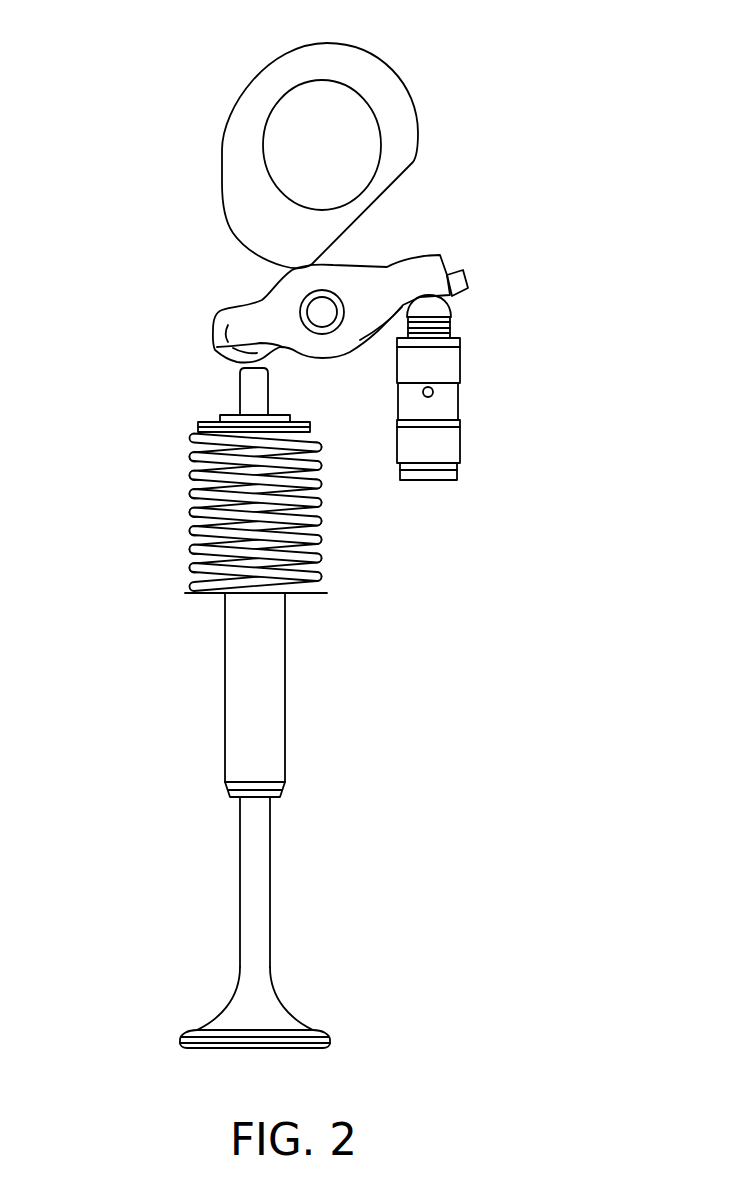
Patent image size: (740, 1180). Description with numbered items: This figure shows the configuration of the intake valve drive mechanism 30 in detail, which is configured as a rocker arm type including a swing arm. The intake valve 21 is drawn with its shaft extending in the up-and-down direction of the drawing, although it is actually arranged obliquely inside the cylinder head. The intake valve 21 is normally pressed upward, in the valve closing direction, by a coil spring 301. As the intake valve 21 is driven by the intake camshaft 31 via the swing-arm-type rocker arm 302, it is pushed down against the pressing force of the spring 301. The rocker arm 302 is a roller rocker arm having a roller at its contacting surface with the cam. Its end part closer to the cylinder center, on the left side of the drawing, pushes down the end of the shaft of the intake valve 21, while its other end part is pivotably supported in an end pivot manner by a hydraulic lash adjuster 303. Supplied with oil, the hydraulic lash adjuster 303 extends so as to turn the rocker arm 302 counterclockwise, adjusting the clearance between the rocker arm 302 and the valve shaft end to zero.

The intake valve drive mechanism 30 is at (123, 106).
The intake camshaft 31 is at (388, 67).
The rocker arm 302 is at (388, 267).
The hydraulic lash adjuster 303 is at (463, 440).
The coil spring 301 is at (325, 552).
The intake valve 21 is at (271, 870).